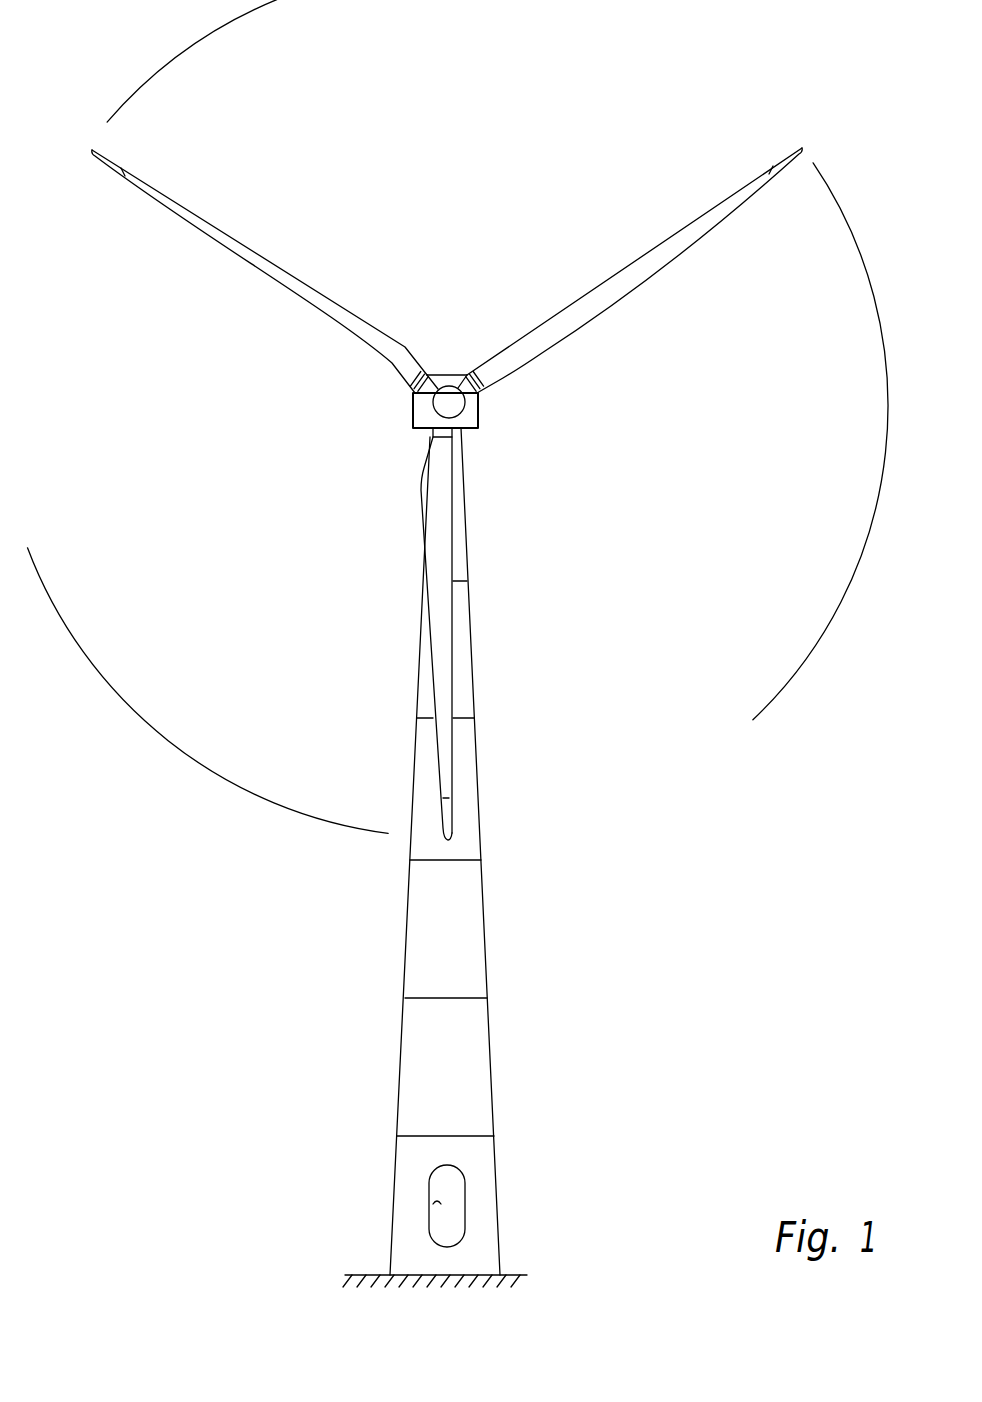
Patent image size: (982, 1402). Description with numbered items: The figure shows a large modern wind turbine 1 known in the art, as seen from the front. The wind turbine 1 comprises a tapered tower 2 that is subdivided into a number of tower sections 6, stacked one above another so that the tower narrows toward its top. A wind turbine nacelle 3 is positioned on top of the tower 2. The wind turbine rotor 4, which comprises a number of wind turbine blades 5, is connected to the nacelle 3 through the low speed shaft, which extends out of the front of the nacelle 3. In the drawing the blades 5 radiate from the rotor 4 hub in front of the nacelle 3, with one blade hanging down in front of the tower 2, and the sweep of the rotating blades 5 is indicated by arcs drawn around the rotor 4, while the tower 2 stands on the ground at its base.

The wind turbine 1 is at (372, 1084).
The tapered tower 2 is at (477, 943).
The wind turbine nacelle 3 is at (478, 428).
The wind turbine rotor 4 is at (413, 400).
The wind turbine blades 5 is at (447, 680).
The tower sections 6 is at (443, 1060).